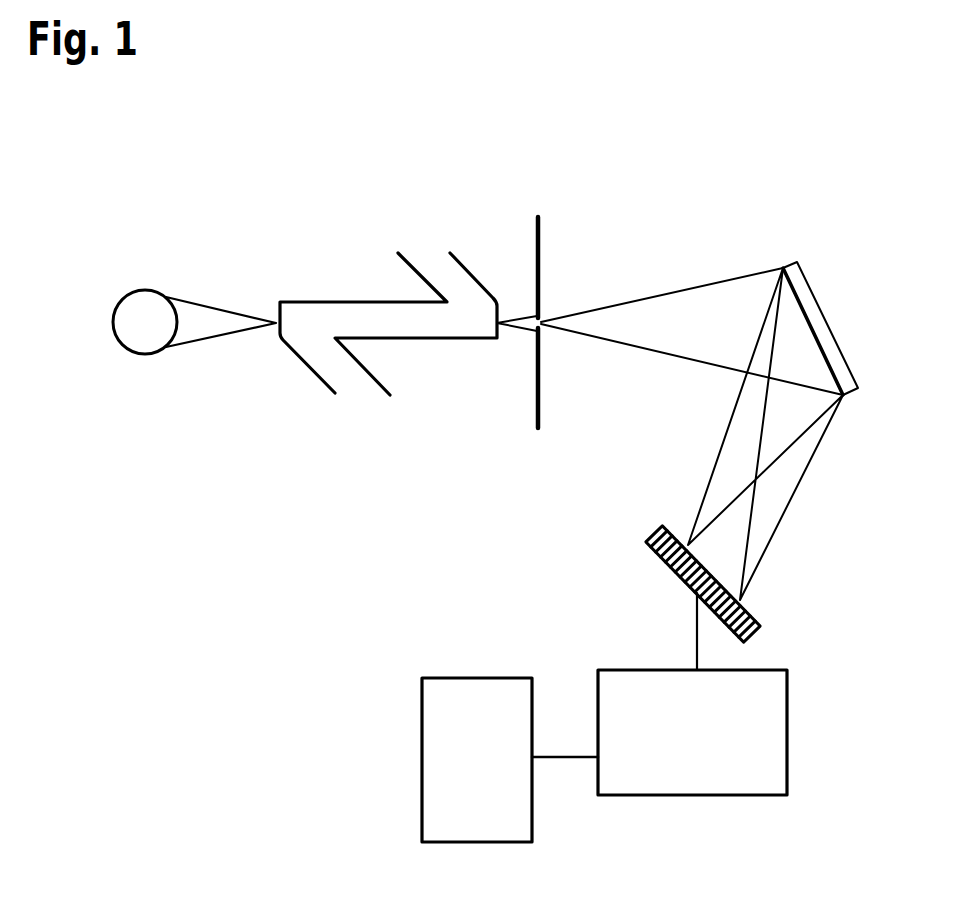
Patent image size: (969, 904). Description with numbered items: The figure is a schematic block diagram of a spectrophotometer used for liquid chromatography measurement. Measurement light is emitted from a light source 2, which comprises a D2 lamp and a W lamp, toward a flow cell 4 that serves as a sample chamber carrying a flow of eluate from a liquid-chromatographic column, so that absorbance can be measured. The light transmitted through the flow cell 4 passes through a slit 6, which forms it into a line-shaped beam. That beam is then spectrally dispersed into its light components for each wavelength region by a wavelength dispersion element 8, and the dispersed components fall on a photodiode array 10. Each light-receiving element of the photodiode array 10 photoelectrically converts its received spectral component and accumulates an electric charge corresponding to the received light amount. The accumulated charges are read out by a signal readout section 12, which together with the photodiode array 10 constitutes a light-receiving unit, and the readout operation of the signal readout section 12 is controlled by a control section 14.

The light source 2 is at (143, 302).
The flow cell 4 is at (338, 302).
The slit 6 is at (540, 235).
The wavelength dispersion element 8 is at (807, 278).
The photodiode array 10 is at (645, 538).
The signal readout section 12 is at (787, 703).
The control section 14 is at (422, 707).